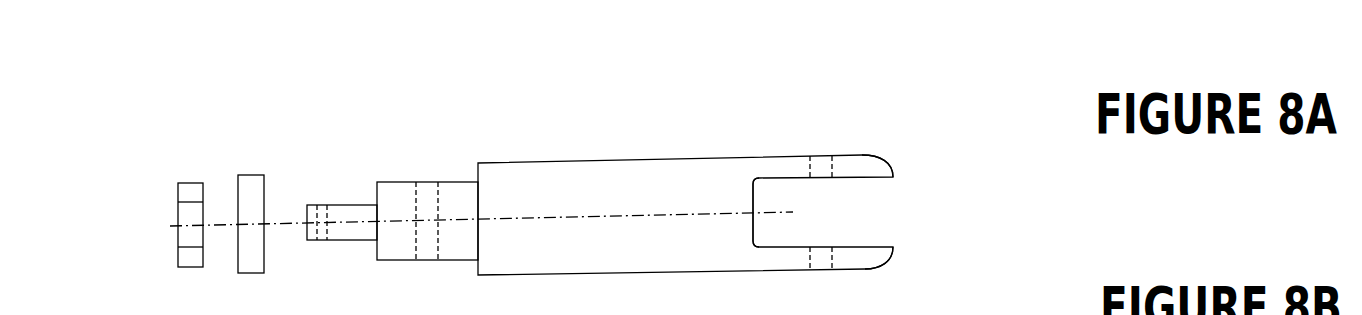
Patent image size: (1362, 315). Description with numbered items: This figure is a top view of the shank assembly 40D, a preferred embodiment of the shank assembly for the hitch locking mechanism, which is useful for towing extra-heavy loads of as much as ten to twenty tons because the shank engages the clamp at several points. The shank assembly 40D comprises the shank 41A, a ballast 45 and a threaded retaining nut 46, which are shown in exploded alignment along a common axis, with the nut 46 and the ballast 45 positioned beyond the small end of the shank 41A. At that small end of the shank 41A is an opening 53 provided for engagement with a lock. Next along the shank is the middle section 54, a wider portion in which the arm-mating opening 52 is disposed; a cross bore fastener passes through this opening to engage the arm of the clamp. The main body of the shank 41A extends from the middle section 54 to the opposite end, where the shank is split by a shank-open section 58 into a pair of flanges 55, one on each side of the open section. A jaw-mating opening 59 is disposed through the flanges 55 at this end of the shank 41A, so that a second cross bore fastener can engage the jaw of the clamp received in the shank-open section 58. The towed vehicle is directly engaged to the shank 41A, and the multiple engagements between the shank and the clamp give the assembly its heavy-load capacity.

The shank assembly 40D is at (392, 112).
The shank 41A is at (607, 172).
The ballast 45 is at (247, 272).
The threaded retaining nut 46 is at (193, 262).
The arm-mating opening 52 is at (423, 193).
The opening 53 is at (317, 243).
The middle section 54 is at (383, 200).
The flange 55 is at (863, 167).
The shank-open section 58 is at (807, 224).
The jaw-mating opening 59 is at (814, 166).